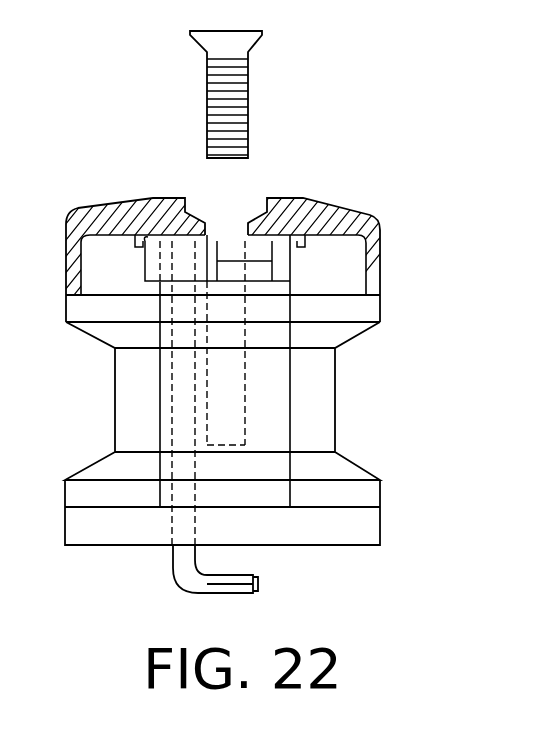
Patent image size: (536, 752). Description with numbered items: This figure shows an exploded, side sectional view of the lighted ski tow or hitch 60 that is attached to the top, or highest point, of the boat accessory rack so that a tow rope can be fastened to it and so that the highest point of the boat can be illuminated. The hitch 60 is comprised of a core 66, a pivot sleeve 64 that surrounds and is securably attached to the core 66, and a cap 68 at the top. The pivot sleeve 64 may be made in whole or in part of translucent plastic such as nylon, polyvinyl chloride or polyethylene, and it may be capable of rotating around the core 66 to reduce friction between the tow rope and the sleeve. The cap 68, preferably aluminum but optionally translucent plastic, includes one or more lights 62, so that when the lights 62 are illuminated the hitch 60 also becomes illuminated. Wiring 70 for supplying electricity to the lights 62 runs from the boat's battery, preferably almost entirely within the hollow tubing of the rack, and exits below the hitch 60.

The hitch 60 is at (257, 375).
The lights 62 is at (172, 242).
The pivot sleeve 64 is at (342, 400).
The core 66 is at (290, 427).
The cap 68 is at (215, 243).
The wiring 70 is at (168, 572).